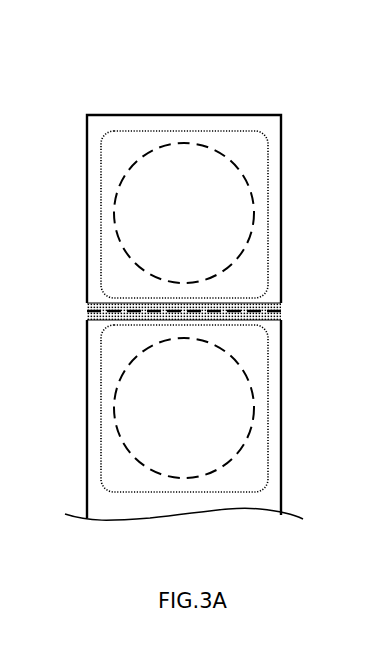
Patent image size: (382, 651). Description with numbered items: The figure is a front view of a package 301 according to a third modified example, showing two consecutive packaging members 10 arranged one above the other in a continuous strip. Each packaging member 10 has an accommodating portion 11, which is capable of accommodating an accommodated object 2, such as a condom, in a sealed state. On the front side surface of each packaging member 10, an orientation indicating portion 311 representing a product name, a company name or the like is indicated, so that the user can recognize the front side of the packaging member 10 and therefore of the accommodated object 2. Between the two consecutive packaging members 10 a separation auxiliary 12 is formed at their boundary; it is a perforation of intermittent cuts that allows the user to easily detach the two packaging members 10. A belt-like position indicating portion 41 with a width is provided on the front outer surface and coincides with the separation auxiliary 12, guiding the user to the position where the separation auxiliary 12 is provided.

The package 301 is at (157, 92).
The packaging member 10 is at (87, 158).
The accommodating portion 11 is at (102, 188).
The accommodated object 2 is at (250, 192).
The orientation indicating portion 311 is at (249, 240).
The separation auxiliary 12 is at (120, 306).
The position indicating portion 41 is at (270, 303).